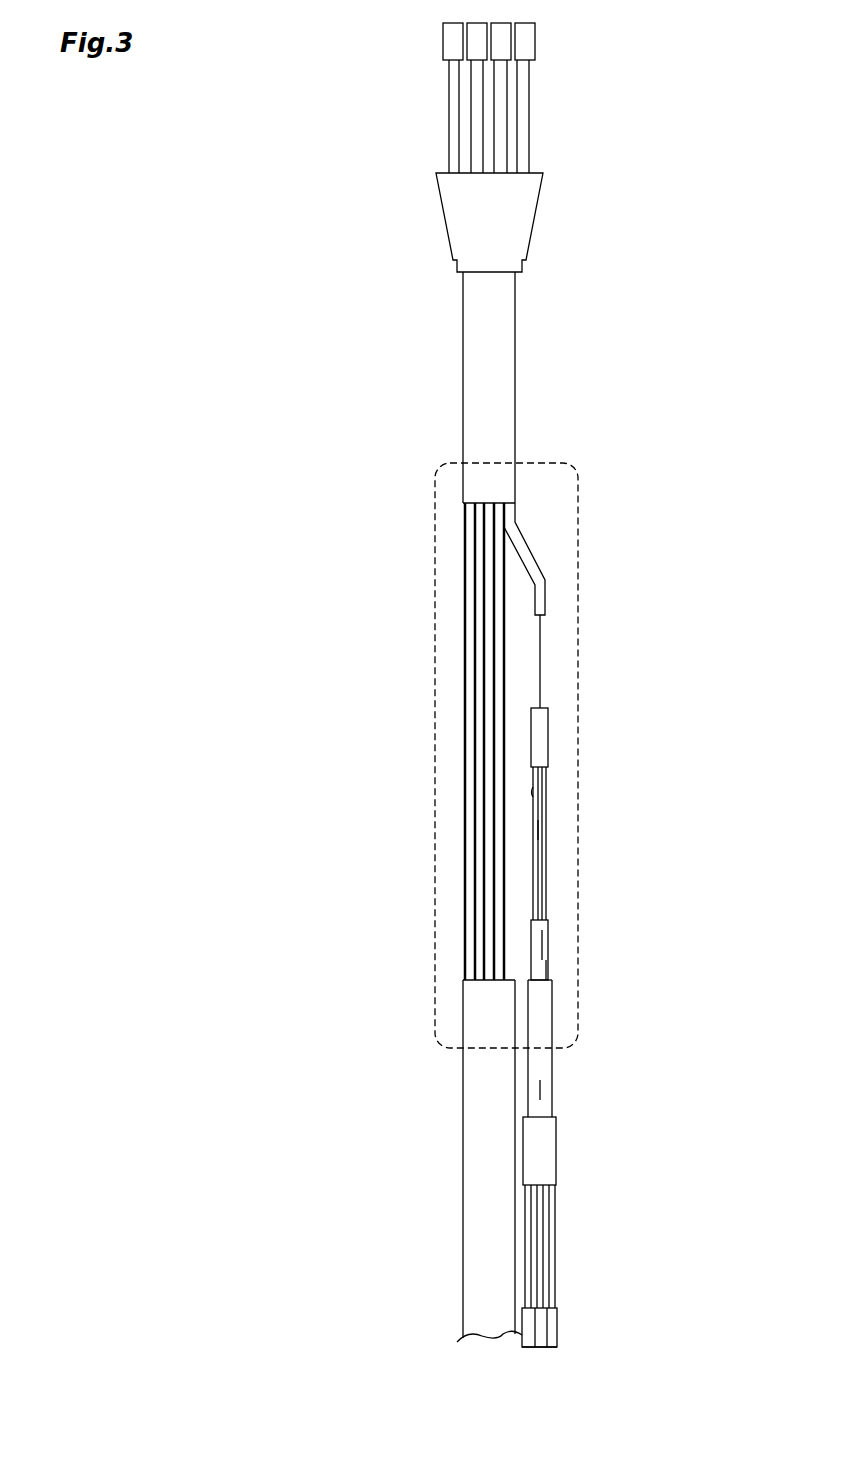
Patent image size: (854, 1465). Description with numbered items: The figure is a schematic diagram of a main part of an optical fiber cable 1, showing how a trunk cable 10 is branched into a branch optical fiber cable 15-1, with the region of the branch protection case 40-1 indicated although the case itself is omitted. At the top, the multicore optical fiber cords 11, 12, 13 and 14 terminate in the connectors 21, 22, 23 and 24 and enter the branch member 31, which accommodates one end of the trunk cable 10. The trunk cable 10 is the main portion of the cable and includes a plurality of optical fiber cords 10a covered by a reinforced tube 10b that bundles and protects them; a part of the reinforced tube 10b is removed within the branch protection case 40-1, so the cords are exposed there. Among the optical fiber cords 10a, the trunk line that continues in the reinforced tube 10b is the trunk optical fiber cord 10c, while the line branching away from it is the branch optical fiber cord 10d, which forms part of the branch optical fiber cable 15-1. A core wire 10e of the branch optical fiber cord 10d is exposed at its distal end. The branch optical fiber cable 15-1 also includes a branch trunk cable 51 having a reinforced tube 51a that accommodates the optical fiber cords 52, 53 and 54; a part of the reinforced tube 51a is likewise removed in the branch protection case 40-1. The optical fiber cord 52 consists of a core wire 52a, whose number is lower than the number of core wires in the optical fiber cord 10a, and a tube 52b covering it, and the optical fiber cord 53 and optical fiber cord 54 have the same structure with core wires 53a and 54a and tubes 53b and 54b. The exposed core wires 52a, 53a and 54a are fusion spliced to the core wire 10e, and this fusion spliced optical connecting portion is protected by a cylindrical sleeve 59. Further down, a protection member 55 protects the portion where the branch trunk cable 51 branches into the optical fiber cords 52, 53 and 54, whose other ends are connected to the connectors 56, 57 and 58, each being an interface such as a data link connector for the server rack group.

The optical fiber cable 1 is at (680, 130).
The trunk cable 10 is at (495, 387).
The optical fiber cord 10a is at (506, 741).
The reinforced tube 10b is at (475, 403).
The trunk optical fiber cord 10c is at (500, 628).
The branch optical fiber cord 10d is at (540, 566).
The core wire 10e is at (545, 658).
The multicore optical fiber cord 11 is at (523, 128).
The multicore optical fiber cord 12 is at (501, 160).
The multicore optical fiber cord 13 is at (479, 107).
The multicore optical fiber cord 14 is at (451, 137).
The branch optical fiber cable 15-1 is at (568, 1070).
The connector 21 is at (525, 38).
The connector 22 is at (500, 47).
The connector 23 is at (478, 47).
The connector 24 is at (452, 38).
The branch member 31 is at (525, 220).
The branch protection case 40-1 is at (580, 498).
The branch trunk cable 51 is at (559, 1102).
The reinforced tube 51a is at (553, 1083).
The optical fiber cord 52 is at (613, 873).
The core wire 52a is at (548, 877).
The tube 52b is at (544, 932).
The optical fiber cord 53 is at (550, 1243).
The core wire 53a is at (540, 830).
The tube 53b is at (548, 962).
The optical fiber cord 54 is at (542, 1270).
The core wire 54a is at (538, 792).
The tube 54b is at (550, 982).
The protection member 55 is at (543, 1163).
The connector 56 is at (552, 1323).
The connector 57 is at (548, 1337).
The connector 58 is at (540, 1358).
The sleeve 59 is at (545, 738).